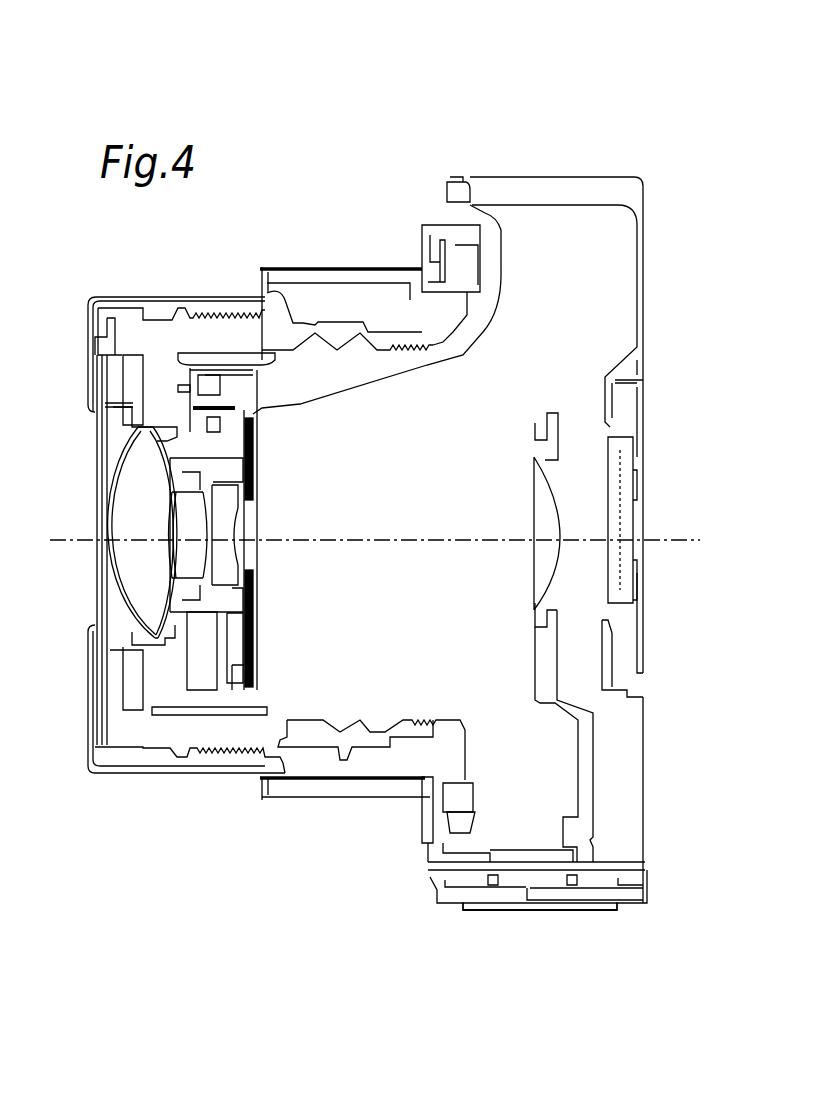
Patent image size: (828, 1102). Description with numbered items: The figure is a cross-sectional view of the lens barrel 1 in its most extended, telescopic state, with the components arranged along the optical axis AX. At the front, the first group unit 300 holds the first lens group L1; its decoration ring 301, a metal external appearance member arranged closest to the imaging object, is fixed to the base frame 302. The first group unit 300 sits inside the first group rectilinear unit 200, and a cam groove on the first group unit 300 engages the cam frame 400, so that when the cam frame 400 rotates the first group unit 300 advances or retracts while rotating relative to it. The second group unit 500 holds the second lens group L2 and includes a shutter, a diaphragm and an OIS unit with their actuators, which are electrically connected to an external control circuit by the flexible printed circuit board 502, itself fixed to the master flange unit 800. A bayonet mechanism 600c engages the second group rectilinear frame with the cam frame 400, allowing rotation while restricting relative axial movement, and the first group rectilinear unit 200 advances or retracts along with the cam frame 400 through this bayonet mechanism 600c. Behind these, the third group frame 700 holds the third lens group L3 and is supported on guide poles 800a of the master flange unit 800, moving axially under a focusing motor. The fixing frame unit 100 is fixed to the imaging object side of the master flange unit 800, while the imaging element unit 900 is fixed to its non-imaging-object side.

The lens barrel 1 is at (607, 105).
The fixing frame unit 100 is at (585, 910).
The first group rectilinear unit 200 is at (345, 268).
The first group unit 300 is at (163, 297).
The decoration ring 301 is at (91, 758).
The base frame 302 is at (160, 762).
The cam frame 400 is at (412, 337).
The second group unit 500 is at (257, 582).
The flexible printed circuit board 502 is at (355, 390).
The bayonet mechanism 600c is at (452, 274).
The third group frame 700 is at (590, 748).
The master flange unit 800 is at (643, 288).
The guide poles 800a is at (520, 870).
The imaging element unit 900 is at (616, 530).
The optical axis AX is at (75, 541).
The first lens group L1 is at (128, 597).
The second lens group L2 is at (236, 542).
The third lens group L3 is at (532, 579).